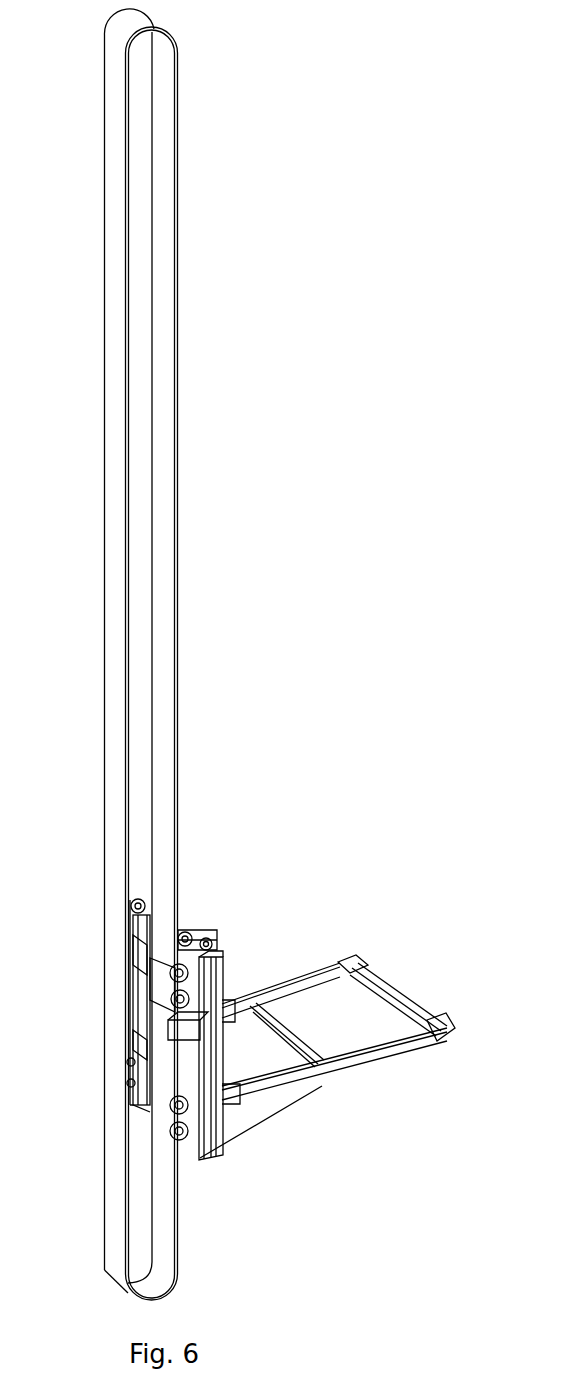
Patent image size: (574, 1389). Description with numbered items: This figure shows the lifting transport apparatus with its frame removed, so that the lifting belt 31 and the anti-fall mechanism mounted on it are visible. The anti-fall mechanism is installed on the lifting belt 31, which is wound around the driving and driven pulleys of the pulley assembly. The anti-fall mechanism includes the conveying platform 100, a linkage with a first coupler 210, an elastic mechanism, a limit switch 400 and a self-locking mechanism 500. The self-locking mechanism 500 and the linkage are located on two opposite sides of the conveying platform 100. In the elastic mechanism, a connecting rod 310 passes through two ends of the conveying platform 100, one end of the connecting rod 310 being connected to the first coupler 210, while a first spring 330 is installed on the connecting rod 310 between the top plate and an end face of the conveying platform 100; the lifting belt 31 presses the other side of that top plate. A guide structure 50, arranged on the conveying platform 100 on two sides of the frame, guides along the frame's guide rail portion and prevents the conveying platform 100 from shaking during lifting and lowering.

The lifting belt 31 is at (167, 810).
The connecting rod 310 is at (187, 922).
The first coupler 210 is at (183, 927).
The first spring 330 is at (192, 930).
The limit switch 400 is at (222, 974).
The self-locking mechanism 500 is at (182, 1068).
The conveying platform 100 is at (225, 1105).
The guide structure 50 is at (182, 1145).